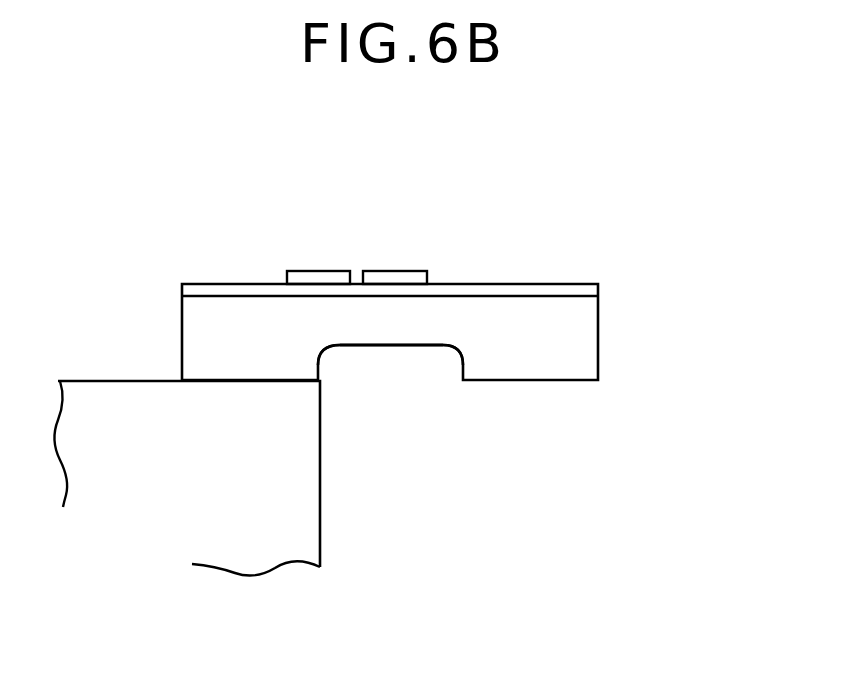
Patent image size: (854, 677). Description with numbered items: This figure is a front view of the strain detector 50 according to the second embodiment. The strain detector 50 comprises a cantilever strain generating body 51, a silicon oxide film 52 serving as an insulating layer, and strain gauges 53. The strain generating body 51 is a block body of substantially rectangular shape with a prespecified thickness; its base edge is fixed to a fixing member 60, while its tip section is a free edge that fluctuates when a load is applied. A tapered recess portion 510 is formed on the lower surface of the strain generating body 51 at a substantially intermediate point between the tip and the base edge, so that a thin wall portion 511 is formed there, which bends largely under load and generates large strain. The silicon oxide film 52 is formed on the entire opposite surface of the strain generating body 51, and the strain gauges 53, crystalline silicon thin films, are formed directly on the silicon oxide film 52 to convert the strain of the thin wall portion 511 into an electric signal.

The strain detector 50 is at (467, 298).
The strain generating body 51 is at (588, 338).
The silicon oxide film 52 is at (518, 284).
The strain gauge 53 is at (402, 275).
The recess portion 510 is at (462, 368).
The thin wall portion 511 is at (378, 327).
The fixing member 60 is at (309, 516).